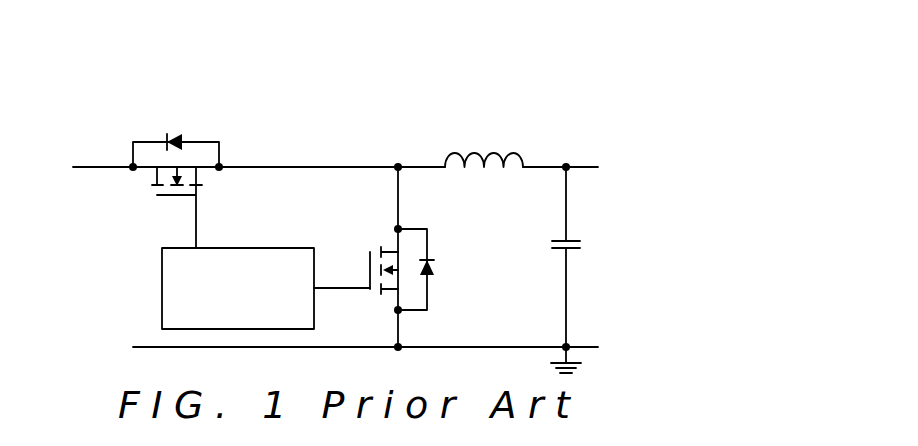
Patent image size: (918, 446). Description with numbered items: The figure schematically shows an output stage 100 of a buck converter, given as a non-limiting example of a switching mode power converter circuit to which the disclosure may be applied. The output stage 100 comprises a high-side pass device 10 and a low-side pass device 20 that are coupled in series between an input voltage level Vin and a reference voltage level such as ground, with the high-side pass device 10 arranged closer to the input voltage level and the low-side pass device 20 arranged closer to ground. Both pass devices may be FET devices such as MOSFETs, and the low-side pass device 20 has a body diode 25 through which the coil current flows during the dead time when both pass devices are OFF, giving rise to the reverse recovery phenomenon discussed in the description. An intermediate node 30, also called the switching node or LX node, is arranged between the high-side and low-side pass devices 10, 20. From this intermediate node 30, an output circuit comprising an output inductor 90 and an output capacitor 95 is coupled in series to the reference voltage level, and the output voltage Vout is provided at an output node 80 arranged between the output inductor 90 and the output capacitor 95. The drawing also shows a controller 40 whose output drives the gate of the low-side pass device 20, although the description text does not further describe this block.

The output stage 100 is at (178, 54).
The high-side pass device 10 is at (200, 141).
The low-side pass device 20 is at (434, 261).
The body diode 25 is at (434, 261).
The intermediate node 30 is at (399, 163).
The controller 40 is at (279, 248).
The output node 80 is at (567, 163).
The output inductor 90 is at (485, 140).
The output capacitor 95 is at (582, 252).